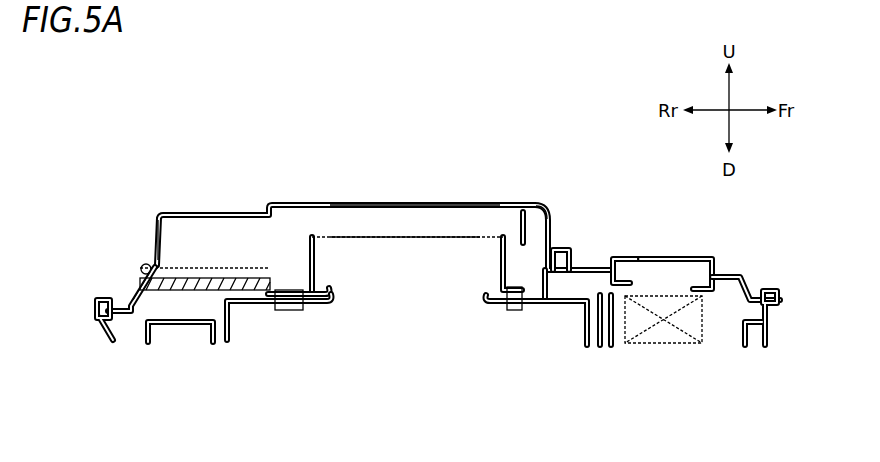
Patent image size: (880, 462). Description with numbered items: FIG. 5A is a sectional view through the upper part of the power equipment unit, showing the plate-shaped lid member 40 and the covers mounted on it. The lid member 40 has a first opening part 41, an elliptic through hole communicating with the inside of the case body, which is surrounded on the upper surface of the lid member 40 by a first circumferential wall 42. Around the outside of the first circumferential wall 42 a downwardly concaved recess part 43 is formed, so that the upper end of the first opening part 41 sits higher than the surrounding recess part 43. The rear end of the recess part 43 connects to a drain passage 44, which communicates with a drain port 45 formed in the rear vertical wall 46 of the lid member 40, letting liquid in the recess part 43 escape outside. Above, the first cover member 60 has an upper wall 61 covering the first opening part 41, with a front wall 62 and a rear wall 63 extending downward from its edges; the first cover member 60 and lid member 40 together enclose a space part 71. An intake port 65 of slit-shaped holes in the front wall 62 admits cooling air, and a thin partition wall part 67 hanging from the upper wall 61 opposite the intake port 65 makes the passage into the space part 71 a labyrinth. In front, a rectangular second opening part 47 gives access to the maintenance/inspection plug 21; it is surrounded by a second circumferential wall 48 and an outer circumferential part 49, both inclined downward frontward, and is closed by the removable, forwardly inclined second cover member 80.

The maintenance/inspection plug 21 is at (660, 348).
The lid member 40 is at (134, 282).
The first opening part 41 is at (342, 263).
The first circumferential wall 42 is at (305, 253).
The recess part 43 is at (287, 291).
The drain passage 44 is at (195, 286).
The drain port 45 is at (140, 266).
The rear vertical wall 46 is at (124, 298).
The second opening part 47 is at (660, 284).
The second circumferential wall 48 is at (625, 256).
The outer circumferential part 49 is at (736, 290).
The first cover member 60 is at (415, 209).
The upper wall 61 is at (375, 210).
The front wall 62 is at (553, 218).
The rear wall 63 is at (153, 234).
The intake port 65 is at (555, 228).
The partition wall part 67 is at (530, 214).
The space part 71 is at (206, 255).
The second cover member 80 is at (700, 262).